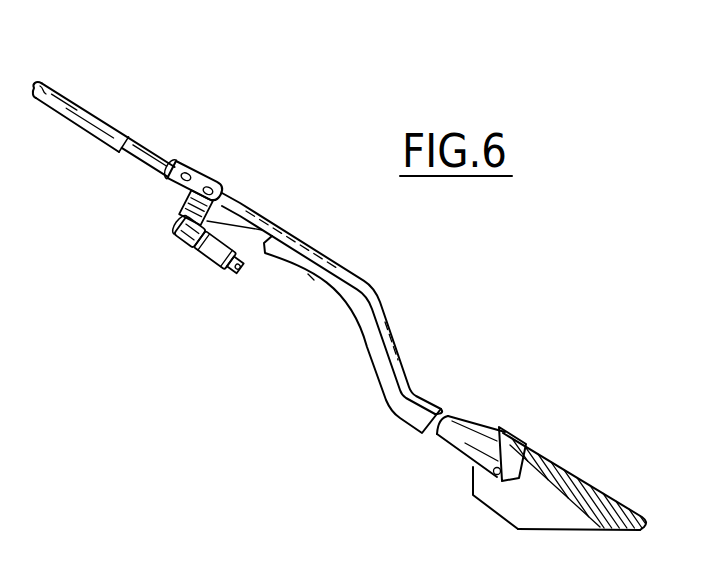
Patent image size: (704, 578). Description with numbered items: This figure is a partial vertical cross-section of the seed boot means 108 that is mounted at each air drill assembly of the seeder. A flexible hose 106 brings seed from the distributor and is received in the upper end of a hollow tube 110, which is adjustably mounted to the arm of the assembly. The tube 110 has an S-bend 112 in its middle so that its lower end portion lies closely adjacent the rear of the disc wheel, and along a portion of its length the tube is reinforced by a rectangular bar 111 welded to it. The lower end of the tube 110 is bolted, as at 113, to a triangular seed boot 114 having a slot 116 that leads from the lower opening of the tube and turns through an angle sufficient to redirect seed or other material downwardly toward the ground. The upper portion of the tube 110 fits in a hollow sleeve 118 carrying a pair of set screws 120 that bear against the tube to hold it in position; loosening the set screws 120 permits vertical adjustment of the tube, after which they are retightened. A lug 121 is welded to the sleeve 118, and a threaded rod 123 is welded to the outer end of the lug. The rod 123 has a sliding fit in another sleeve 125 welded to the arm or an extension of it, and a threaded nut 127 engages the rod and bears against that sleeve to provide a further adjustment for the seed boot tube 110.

The flexible hose 106 is at (78, 92).
The seed boot means 108 is at (409, 337).
The hollow tube 110 is at (148, 140).
The rectangular bar 111 is at (387, 383).
The S-bend 112 is at (403, 350).
The bolted connection 113 is at (517, 448).
The triangular seed boot 114 is at (597, 475).
The slot 116 is at (508, 495).
The hollow sleeve 118 is at (200, 173).
The set screws 120 is at (210, 193).
The lug 121 is at (263, 221).
The threaded rod 123 is at (180, 230).
The sleeve 125 is at (203, 250).
The threaded nut 127 is at (220, 268).